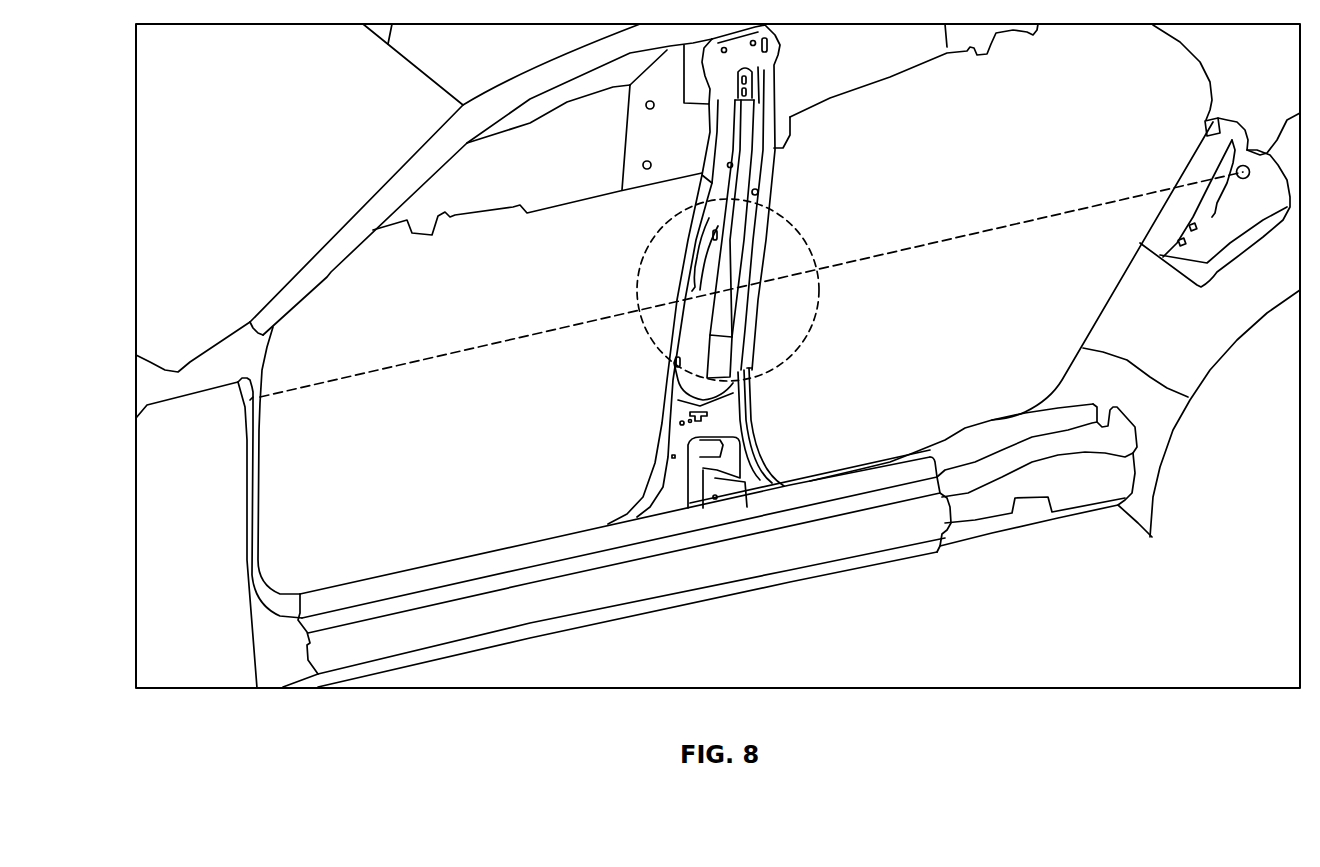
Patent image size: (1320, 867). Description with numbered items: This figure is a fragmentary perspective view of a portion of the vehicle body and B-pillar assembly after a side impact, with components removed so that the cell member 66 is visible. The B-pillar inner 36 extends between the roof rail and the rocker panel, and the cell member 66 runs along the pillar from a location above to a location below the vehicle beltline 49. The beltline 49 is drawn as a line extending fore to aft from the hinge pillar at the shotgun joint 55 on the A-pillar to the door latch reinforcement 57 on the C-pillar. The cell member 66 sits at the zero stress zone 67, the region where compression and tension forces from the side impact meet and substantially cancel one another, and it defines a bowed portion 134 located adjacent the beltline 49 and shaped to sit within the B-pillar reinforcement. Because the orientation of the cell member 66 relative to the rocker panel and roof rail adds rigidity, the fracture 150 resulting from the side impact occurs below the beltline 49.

The B-pillar inner 36 is at (763, 182).
The vehicle beltline 49 is at (933, 244).
The shotgun joint 55 is at (243, 382).
The door latch reinforcement 57 is at (1236, 170).
The cell member 66 is at (748, 160).
The zero stress zone 67 is at (815, 248).
The bowed portion 134 is at (705, 306).
The fracture 150 is at (732, 336).